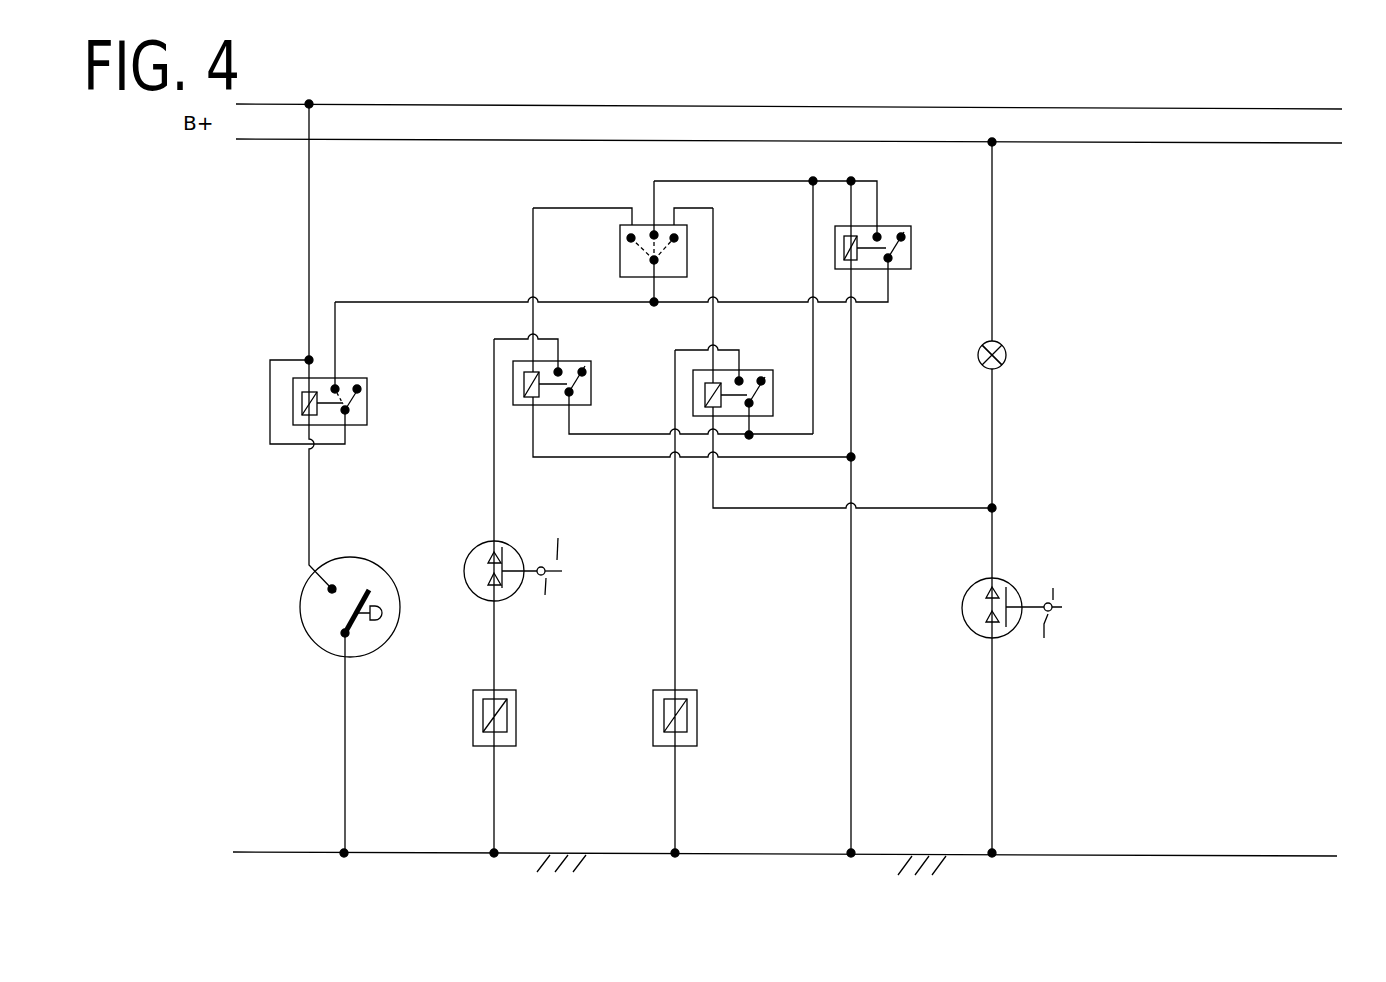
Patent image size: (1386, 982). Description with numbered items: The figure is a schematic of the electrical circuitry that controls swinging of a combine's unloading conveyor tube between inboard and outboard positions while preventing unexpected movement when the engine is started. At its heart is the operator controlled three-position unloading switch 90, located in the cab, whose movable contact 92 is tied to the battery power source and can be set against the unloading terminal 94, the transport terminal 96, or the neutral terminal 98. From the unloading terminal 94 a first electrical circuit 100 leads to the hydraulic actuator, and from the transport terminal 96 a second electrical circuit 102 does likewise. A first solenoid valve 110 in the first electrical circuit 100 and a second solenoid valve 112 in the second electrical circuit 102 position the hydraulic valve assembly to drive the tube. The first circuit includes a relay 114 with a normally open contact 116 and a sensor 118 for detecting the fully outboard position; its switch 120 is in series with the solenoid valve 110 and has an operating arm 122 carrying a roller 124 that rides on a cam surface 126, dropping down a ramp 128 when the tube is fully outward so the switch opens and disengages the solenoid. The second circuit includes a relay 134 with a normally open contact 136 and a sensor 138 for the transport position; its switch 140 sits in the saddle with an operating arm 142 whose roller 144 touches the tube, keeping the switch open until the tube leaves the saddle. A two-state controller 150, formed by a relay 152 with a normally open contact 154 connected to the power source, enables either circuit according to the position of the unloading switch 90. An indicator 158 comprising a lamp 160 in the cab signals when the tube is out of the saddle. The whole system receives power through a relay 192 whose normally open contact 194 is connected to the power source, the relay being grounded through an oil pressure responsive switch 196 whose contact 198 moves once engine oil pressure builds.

The unloading switch 90 is at (618, 250).
The movable contact 92 is at (654, 260).
The unloading terminal 94 is at (631, 238).
The transport terminal 96 is at (674, 238).
The neutral terminal 98 is at (654, 235).
The first electrical circuit 100 is at (490, 483).
The second electrical circuit 102 is at (683, 642).
The first solenoid valve 110 is at (470, 720).
The second solenoid valve 112 is at (700, 712).
The relay 114 is at (568, 358).
The normally open contact 116 is at (578, 382).
The sensor 118 is at (465, 568).
The switch 120 is at (468, 586).
The operating arm 122 is at (514, 570).
The roller 124 is at (562, 571).
The cam surface 126 is at (542, 581).
The ramp 128 is at (551, 556).
The relay 134 is at (758, 367).
The normally open contact 136 is at (768, 402).
The sensor 138 is at (973, 578).
The switch 140 is at (980, 627).
The operating arm 142 is at (1035, 605).
The roller 144 is at (1062, 607).
The two-state controller 150 is at (920, 226).
The relay 152 is at (882, 232).
The normally open contact 154 is at (893, 246).
The indicator 158 is at (1003, 342).
The lamp 160 is at (1006, 357).
The relay 192 is at (351, 370).
The normally open contact 194 is at (352, 398).
The oil pressure responsive switch 196 is at (318, 652).
The contact 198 is at (353, 602).